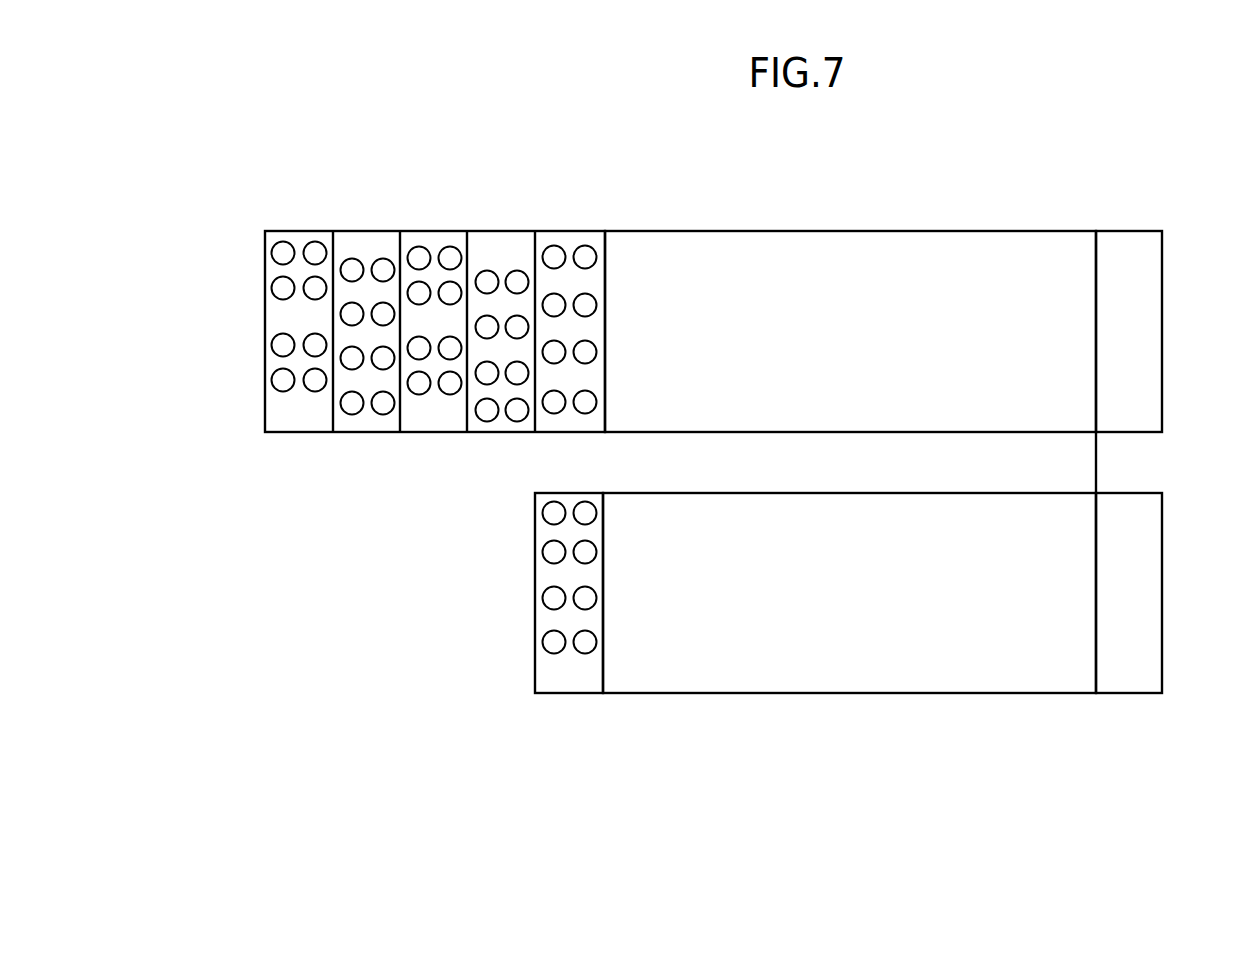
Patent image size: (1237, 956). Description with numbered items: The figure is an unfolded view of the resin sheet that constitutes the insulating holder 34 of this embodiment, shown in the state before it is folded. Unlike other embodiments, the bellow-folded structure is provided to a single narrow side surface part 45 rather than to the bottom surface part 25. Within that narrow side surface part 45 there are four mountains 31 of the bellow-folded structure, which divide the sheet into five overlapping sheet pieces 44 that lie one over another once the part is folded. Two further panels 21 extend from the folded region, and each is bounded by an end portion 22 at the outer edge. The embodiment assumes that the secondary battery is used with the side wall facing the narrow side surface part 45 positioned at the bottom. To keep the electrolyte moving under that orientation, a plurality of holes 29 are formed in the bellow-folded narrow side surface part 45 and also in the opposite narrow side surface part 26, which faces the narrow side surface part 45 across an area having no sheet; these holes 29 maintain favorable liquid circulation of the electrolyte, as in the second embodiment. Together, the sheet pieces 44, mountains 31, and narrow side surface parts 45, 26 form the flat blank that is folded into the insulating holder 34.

The body 21 is at (858, 240).
The end block 22 is at (1142, 307).
The bottom surface part 25 is at (1078, 462).
The narrow side surface part 26 is at (542, 673).
The holes 29 is at (583, 410).
The mountains 31 is at (535, 228).
The insulating holder 34 is at (1047, 738).
The overlapping sheet pieces 44 is at (578, 240).
The narrow side surface part 45 is at (389, 381).